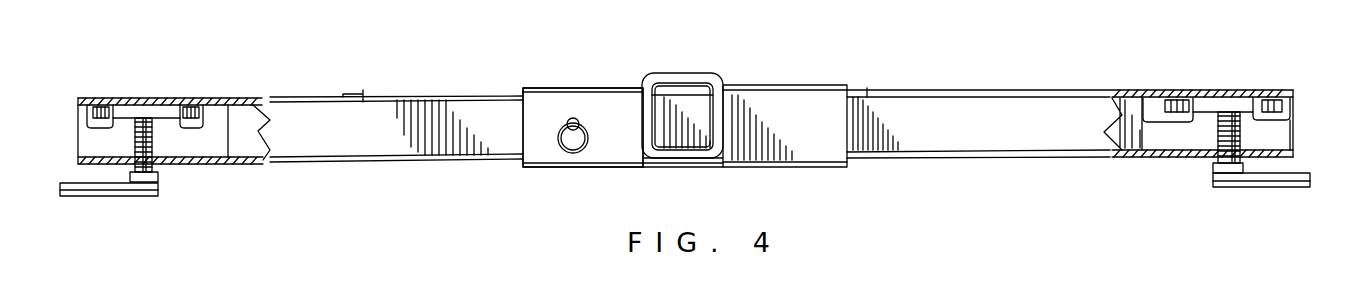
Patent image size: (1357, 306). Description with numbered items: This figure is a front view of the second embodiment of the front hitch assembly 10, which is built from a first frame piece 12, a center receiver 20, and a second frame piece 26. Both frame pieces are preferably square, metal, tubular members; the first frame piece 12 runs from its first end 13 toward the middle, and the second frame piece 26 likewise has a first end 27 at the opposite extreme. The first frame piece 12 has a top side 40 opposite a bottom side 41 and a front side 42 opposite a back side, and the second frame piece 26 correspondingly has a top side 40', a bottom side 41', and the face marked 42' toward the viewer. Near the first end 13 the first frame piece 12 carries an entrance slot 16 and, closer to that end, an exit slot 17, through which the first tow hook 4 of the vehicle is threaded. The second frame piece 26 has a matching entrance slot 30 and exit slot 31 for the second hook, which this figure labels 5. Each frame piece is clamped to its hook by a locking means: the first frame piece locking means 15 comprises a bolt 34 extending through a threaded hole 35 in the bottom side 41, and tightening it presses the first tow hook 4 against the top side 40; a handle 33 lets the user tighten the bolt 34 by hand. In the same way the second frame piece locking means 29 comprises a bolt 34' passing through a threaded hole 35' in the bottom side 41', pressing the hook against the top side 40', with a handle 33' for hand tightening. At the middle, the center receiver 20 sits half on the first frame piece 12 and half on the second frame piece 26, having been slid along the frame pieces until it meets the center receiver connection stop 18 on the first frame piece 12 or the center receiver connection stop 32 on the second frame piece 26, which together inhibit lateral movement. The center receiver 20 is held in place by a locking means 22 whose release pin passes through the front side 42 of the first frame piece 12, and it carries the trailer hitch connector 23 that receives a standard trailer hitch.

The front hitch assembly 10 is at (517, 183).
The first frame piece 12 is at (440, 161).
The first end 13 is at (85, 146).
The first tow hook 4 is at (160, 97).
The second mounting bracket 5 is at (1218, 103).
The first frame piece locking means 15 is at (150, 190).
The entrance slot 16 is at (215, 110).
The exit slot 17 is at (78, 118).
The center receiver connection stop 18 is at (354, 93).
The center receiver 20 is at (832, 168).
The locking means 22 is at (593, 159).
The trailer hitch connector 23 is at (703, 158).
The second frame piece 26 is at (933, 158).
The first end 27 is at (1293, 140).
The second frame piece locking means 29 is at (1293, 194).
The entrance slot 30 is at (1150, 110).
The exit slot 31 is at (1293, 107).
The center receiver connection stop 32 is at (860, 92).
The handle 33 is at (105, 208).
The handle 33' is at (1257, 211).
The bolt 34 is at (183, 155).
The bolt 34' is at (1190, 153).
The threaded hole 35 is at (176, 169).
The threaded hole 35' is at (1196, 168).
The top side 40 is at (186, 87).
The top side 40' is at (1185, 100).
The bottom side 41 is at (190, 179).
The bottom side 41' is at (1184, 177).
The front side 42 is at (396, 128).
The tube interior space 42' is at (978, 124).